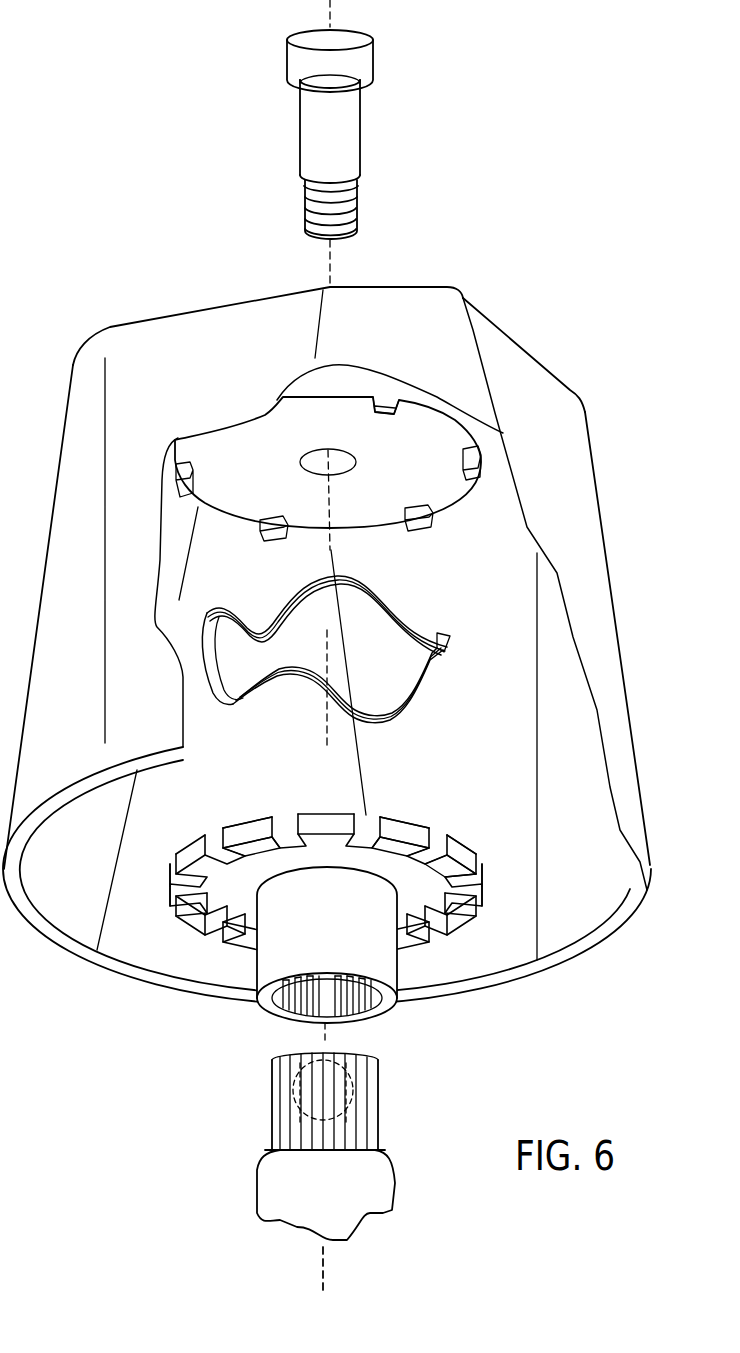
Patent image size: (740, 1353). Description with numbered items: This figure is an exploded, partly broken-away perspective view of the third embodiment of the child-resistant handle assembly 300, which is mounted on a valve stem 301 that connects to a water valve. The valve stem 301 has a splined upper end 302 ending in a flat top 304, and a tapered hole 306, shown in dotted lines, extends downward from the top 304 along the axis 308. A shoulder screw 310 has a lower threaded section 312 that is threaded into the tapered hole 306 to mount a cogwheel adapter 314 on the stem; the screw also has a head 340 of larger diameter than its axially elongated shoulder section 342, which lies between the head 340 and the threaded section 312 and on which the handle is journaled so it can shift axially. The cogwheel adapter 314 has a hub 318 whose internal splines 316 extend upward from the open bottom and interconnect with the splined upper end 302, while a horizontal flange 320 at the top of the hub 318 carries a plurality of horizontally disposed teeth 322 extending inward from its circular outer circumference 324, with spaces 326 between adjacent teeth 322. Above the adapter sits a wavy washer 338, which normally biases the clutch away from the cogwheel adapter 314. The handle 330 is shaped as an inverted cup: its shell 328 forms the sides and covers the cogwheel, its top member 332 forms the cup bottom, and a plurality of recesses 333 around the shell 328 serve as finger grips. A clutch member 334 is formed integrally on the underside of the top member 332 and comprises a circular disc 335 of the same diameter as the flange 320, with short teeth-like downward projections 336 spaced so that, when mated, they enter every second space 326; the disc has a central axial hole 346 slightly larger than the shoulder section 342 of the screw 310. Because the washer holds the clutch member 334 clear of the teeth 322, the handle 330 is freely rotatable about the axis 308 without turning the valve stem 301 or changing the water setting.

The handle assembly 300 is at (345, 645).
The valve stem 301 is at (339, 1159).
The splined upper end 302 is at (380, 1103).
The flat top 304 is at (350, 1050).
The tapered hole 306 is at (300, 1043).
The axis 308 is at (327, 1270).
The shoulder screw 310 is at (335, 119).
The lower threaded section 312 is at (357, 207).
The cogwheel adapter 314 is at (329, 904).
The splines 316 is at (367, 1010).
The hub 318 is at (270, 937).
The horizontal flange 320 is at (263, 823).
The teeth 322 is at (310, 941).
The circular outer circumference 324 is at (407, 827).
The spaces 326 is at (437, 833).
The shell 328 is at (617, 632).
The handle 330 is at (345, 606).
The top member 332 is at (187, 313).
The recesses 333 is at (573, 530).
The clutch member 334 is at (445, 281).
The circular disc 335 is at (363, 428).
The downward projections 336 is at (390, 397).
The wavy washer 338 is at (400, 603).
The head 340 is at (292, 52).
The shoulder section 342 is at (363, 117).
The central axial hole 346 is at (337, 465).